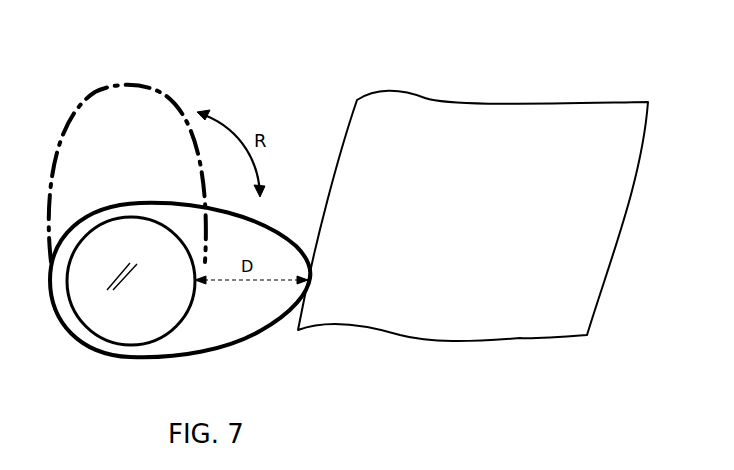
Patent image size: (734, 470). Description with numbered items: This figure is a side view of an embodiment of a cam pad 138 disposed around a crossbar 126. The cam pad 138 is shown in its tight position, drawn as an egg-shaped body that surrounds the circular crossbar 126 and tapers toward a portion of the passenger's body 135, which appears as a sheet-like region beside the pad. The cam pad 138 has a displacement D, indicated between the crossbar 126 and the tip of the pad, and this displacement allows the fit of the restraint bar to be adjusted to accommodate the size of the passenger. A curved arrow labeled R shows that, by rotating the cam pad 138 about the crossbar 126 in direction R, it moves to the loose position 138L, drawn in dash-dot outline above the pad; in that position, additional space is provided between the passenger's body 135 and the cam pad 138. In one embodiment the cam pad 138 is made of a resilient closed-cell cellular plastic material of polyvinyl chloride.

The portion of passenger's body 135 is at (473, 216).
The cam pad 138 is at (248, 318).
The loose position of cam pad 138L is at (138, 82).
The crossbar 126 is at (130, 330).